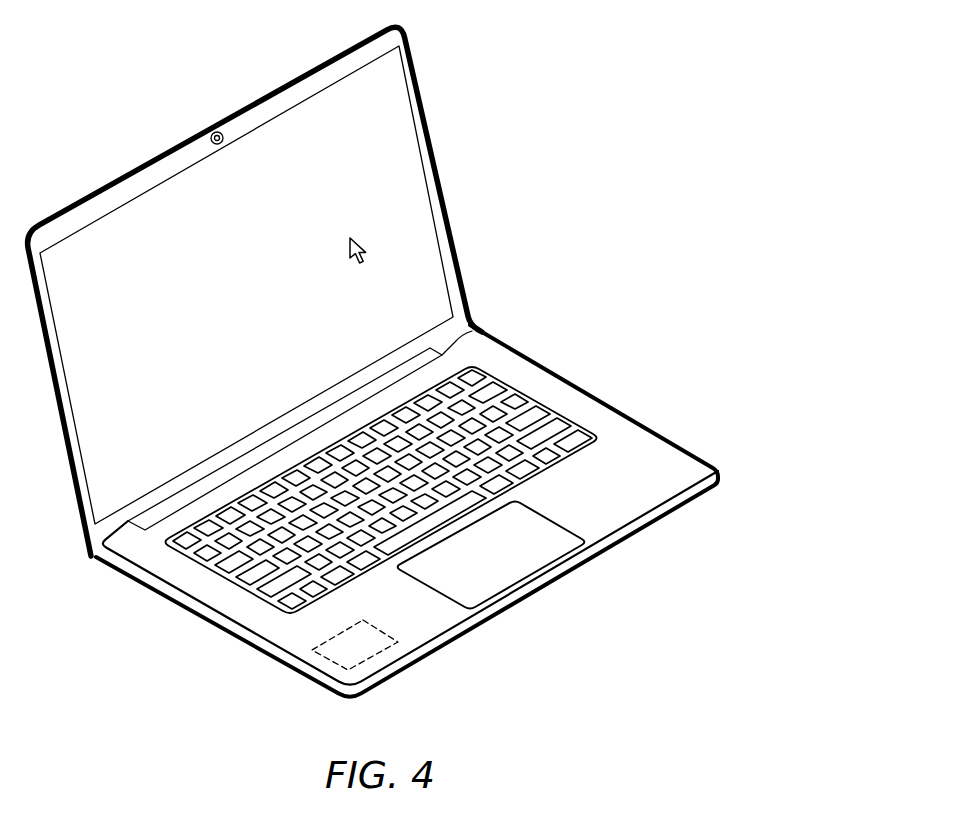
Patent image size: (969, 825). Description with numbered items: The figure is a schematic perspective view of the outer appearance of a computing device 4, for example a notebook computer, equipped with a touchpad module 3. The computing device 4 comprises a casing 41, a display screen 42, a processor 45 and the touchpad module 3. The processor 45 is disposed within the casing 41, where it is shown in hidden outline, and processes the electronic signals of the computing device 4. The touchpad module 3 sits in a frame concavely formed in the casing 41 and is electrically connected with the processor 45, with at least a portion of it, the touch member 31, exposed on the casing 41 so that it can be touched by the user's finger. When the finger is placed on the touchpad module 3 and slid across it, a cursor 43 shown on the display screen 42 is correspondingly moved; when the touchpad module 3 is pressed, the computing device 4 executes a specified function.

The computing device 4 is at (610, 151).
The casing 41 is at (652, 452).
The display screen 42 is at (402, 108).
The cursor 43 is at (364, 239).
The touchpad module 3 is at (509, 578).
The touch member 31 is at (487, 578).
The processor 45 is at (322, 665).